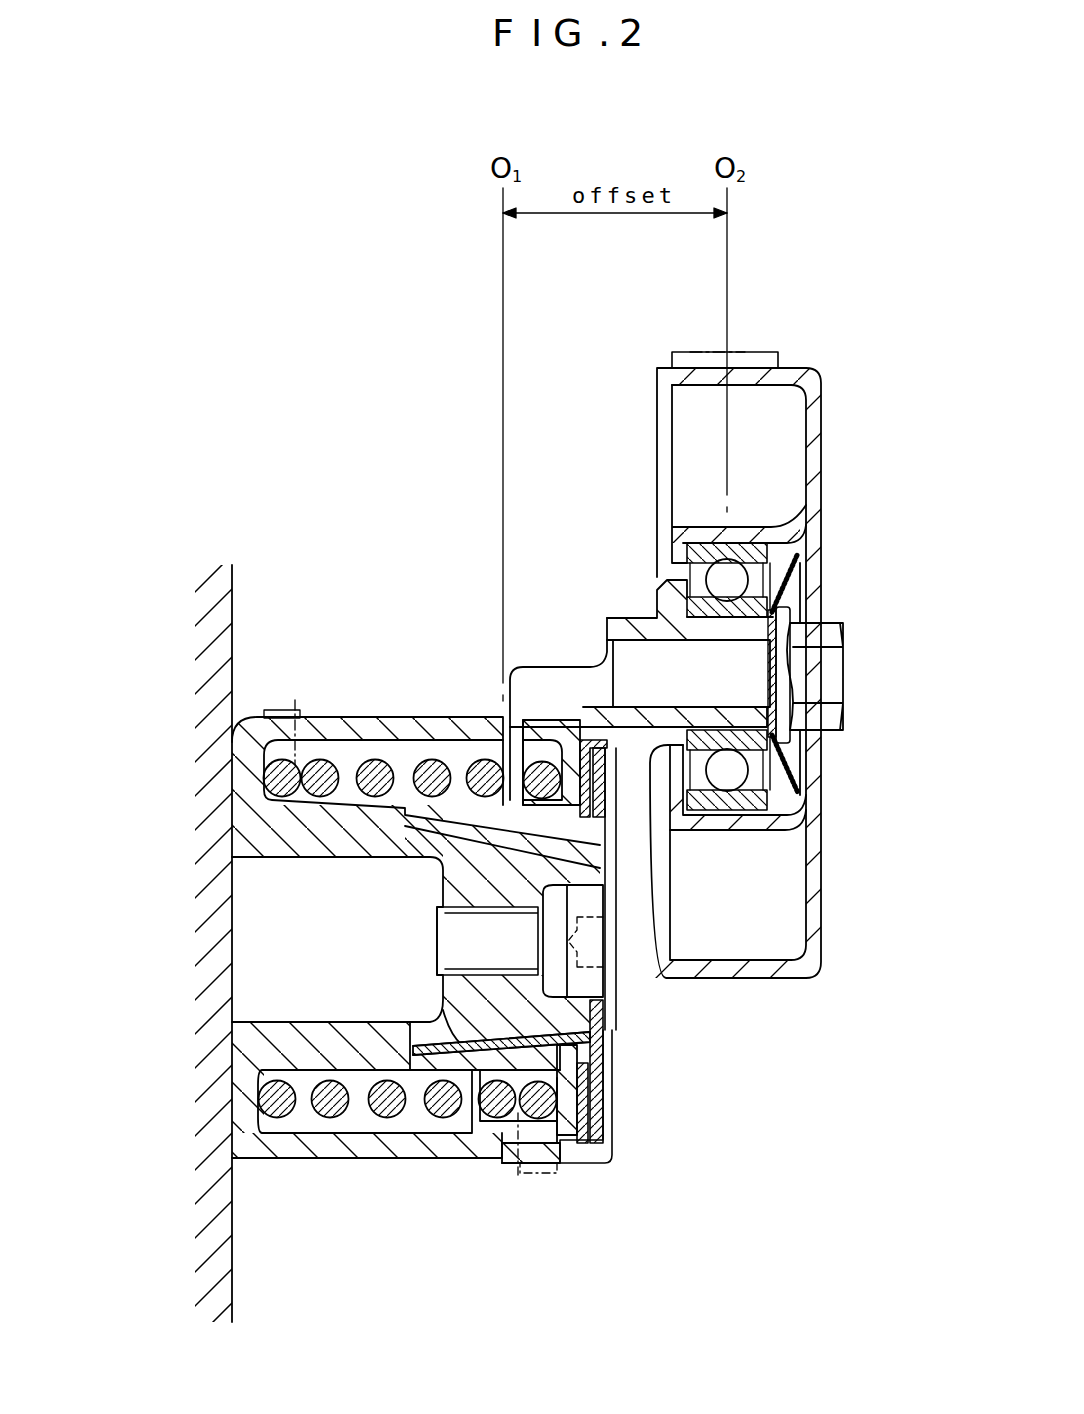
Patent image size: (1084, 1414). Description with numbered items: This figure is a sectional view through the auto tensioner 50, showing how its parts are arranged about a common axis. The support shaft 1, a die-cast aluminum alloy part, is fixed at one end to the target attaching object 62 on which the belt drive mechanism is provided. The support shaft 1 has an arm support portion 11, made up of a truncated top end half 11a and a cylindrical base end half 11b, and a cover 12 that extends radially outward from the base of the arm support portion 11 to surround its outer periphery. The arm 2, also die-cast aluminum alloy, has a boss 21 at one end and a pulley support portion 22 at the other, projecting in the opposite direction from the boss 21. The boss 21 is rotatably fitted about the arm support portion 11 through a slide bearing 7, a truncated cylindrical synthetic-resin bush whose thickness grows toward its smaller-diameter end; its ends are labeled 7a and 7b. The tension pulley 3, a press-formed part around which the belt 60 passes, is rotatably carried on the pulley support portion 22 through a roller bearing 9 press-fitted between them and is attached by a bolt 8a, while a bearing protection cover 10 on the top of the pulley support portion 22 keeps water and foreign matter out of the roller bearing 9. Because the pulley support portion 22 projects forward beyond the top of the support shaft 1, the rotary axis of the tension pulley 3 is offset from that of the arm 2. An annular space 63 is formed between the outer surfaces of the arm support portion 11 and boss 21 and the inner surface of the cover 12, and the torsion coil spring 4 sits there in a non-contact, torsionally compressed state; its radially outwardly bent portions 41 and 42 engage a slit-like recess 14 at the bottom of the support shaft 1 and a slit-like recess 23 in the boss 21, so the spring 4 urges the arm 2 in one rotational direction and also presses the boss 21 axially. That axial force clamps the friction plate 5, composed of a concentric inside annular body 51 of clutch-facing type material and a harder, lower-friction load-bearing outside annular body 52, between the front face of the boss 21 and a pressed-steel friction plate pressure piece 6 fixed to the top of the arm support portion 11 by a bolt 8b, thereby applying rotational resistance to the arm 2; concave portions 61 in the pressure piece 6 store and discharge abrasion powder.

The support shaft 1 is at (402, 1172).
The arm 2 is at (558, 660).
The tension pulley 3 is at (775, 370).
The torsion coil spring 4 is at (360, 1067).
The friction plate 5 is at (678, 981).
The friction plate pressure piece 6 is at (603, 1092).
The slide bearing 7 is at (603, 1063).
The plate portion 7a is at (463, 1045).
The plate portion 7b is at (468, 1135).
The bolt 8a is at (830, 678).
The bolt 8b is at (606, 1000).
The roller bearing 9 is at (725, 822).
The bearing protection cover 10 is at (798, 568).
The arm support portion 11 is at (383, 830).
The truncated top end half 11a is at (537, 1017).
The cylindrical base end half 11b is at (290, 847).
The cover 12 is at (447, 716).
The slit-like recess 14 is at (345, 720).
The boss 21 is at (603, 1058).
The pulley support portion 22 is at (630, 630).
The slit-like recess 23 is at (557, 1177).
The bent portion 41 is at (295, 712).
The bent portion 42 is at (518, 1175).
The auto tensioner 50 is at (760, 1080).
The inside annular body 51 is at (600, 1113).
The outside annular body 52 is at (597, 1137).
The belt 60 is at (745, 352).
The concave portions 61 is at (612, 840).
The target attaching object 62 is at (232, 610).
The annular space 63 is at (405, 740).